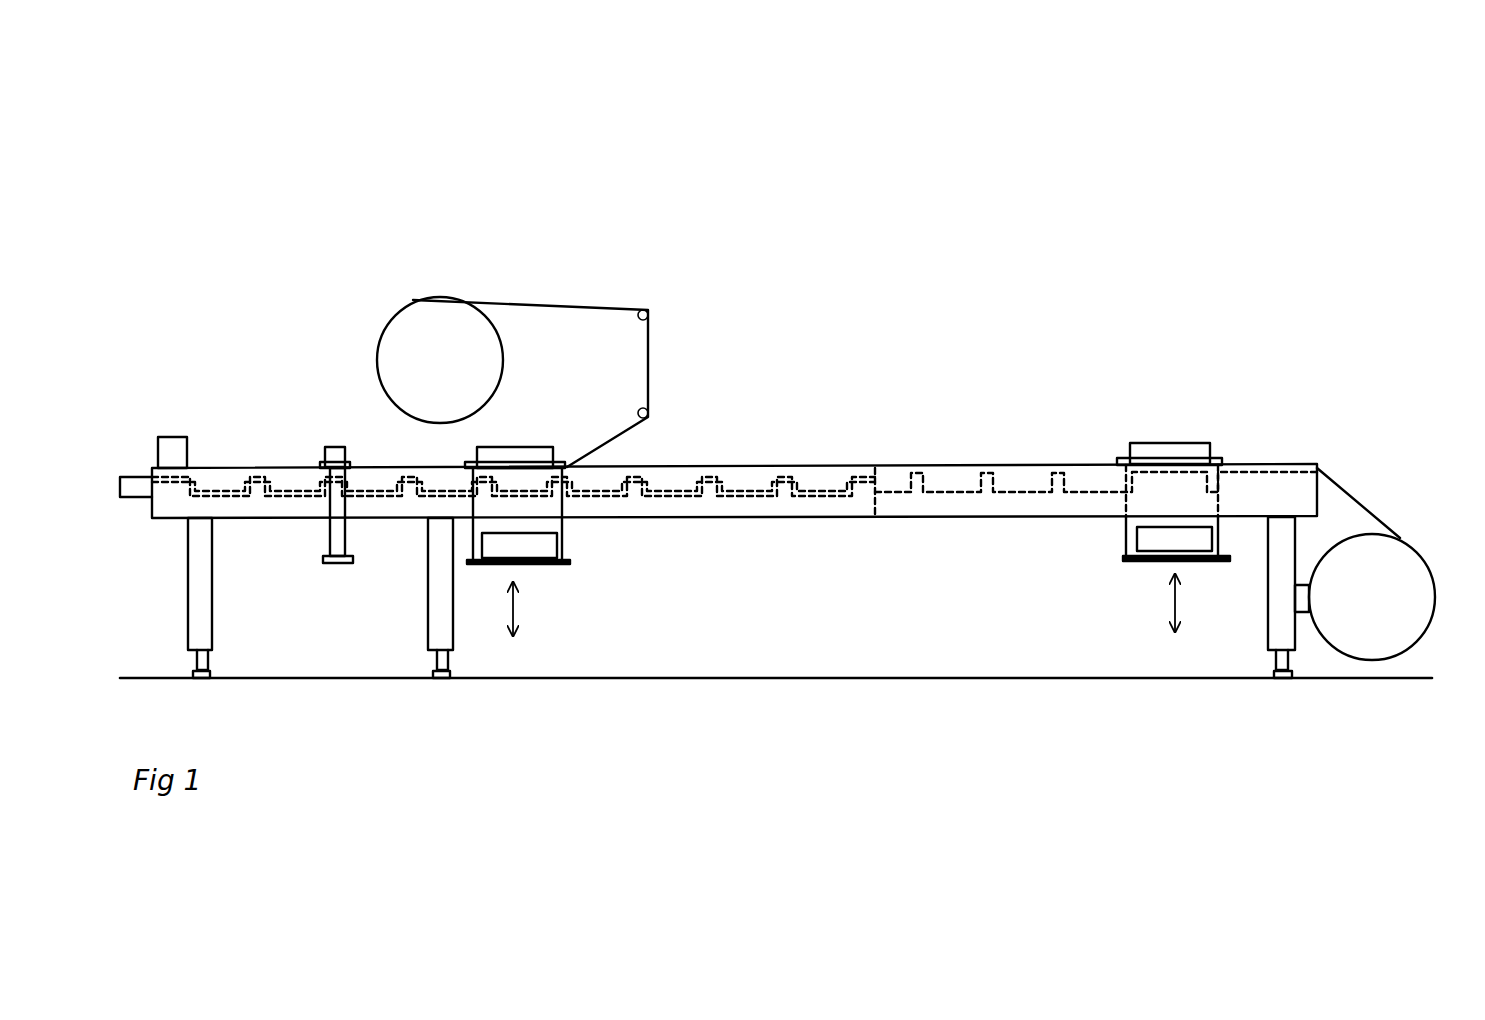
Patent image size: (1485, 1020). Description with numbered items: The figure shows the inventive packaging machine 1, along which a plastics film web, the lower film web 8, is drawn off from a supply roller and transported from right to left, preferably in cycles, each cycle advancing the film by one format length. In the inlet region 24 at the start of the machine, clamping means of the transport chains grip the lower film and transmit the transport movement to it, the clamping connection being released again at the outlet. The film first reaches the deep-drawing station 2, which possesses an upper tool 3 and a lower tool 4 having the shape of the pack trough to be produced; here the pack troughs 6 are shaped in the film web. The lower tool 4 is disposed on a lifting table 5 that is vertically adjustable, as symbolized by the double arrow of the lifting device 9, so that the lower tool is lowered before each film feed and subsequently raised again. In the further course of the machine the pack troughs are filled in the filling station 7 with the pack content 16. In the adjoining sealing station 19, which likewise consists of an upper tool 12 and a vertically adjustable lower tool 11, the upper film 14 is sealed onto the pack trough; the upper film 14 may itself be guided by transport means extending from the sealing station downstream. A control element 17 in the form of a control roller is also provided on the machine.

The packaging machine 1 is at (1187, 149).
The deep-drawing station 2 is at (1189, 429).
The upper tool of the deep-drawing station 3 is at (1143, 445).
The lower tool of the deep-drawing station 4 is at (1135, 520).
The lifting table 5 is at (570, 562).
The pack trough 6 is at (960, 485).
The filling station 7 is at (798, 393).
The lower film web 8 is at (1355, 500).
The lifting device 9 is at (515, 605).
The lower tool of the sealing station 11 is at (558, 530).
The upper tool of the sealing station 12 is at (533, 446).
The upper film 14 is at (397, 325).
The pack content 16 is at (802, 486).
The control element 17 is at (327, 427).
The sealing station 19 is at (514, 431).
The inlet region 24 is at (1316, 392).